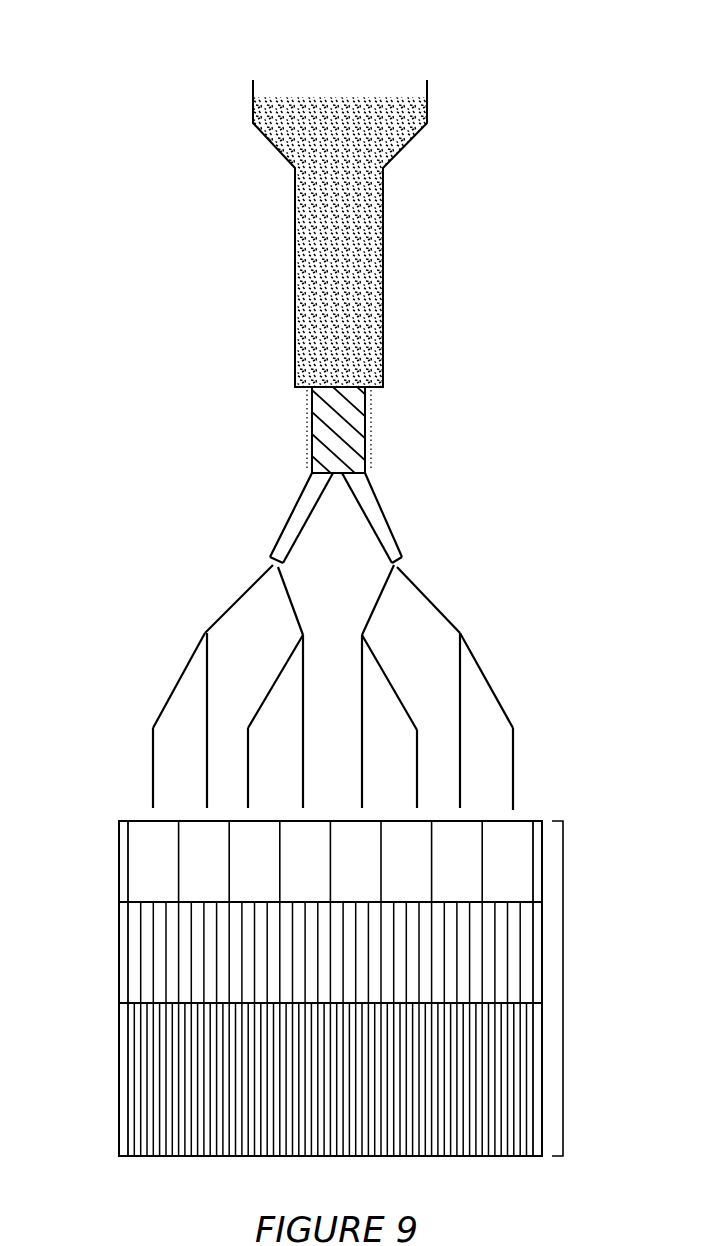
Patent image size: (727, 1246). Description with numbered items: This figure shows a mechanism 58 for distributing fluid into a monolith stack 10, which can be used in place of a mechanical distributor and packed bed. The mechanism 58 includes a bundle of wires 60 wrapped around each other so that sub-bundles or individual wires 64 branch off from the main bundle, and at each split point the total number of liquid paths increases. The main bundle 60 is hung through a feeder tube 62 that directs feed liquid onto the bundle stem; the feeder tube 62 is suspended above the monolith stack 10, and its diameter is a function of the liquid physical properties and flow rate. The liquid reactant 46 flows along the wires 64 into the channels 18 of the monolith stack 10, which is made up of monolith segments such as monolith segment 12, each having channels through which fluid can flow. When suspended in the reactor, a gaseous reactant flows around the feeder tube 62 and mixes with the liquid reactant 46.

The monolith stack 10 is at (343, 955).
The monolith segment 12 is at (119, 860).
The channels 18 is at (145, 842).
The liquid reactant 46 is at (365, 110).
The mechanism 58 is at (265, 368).
The bundle of wires 60 is at (365, 428).
The feeder tube 62 is at (380, 283).
The wires 64 is at (513, 758).